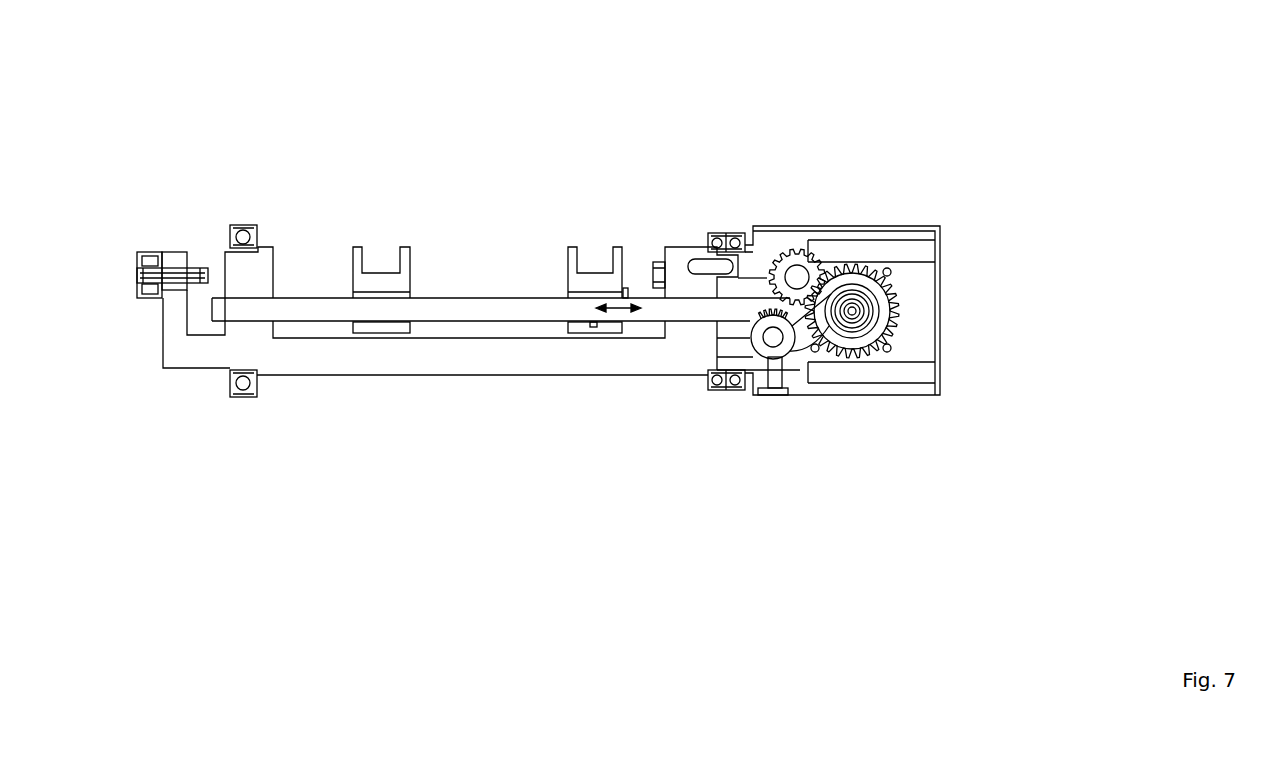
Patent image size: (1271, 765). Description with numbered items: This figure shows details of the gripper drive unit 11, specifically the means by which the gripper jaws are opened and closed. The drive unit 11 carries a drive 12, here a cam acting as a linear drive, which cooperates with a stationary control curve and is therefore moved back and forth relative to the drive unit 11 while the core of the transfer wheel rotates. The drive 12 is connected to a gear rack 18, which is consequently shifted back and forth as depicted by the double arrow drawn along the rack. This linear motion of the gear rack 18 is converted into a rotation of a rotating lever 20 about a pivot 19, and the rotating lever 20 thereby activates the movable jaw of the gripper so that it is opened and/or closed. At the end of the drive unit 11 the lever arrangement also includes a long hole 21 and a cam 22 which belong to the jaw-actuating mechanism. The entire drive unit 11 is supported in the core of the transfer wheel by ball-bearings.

The gripper drive unit 11 is at (492, 123).
The drive for the gripper jaw 12 is at (398, 285).
The gear rack 18 is at (492, 305).
The pivot 19 is at (773, 337).
The rotating lever 20 is at (805, 338).
The long hole 21 is at (878, 312).
The cam 22 is at (858, 299).